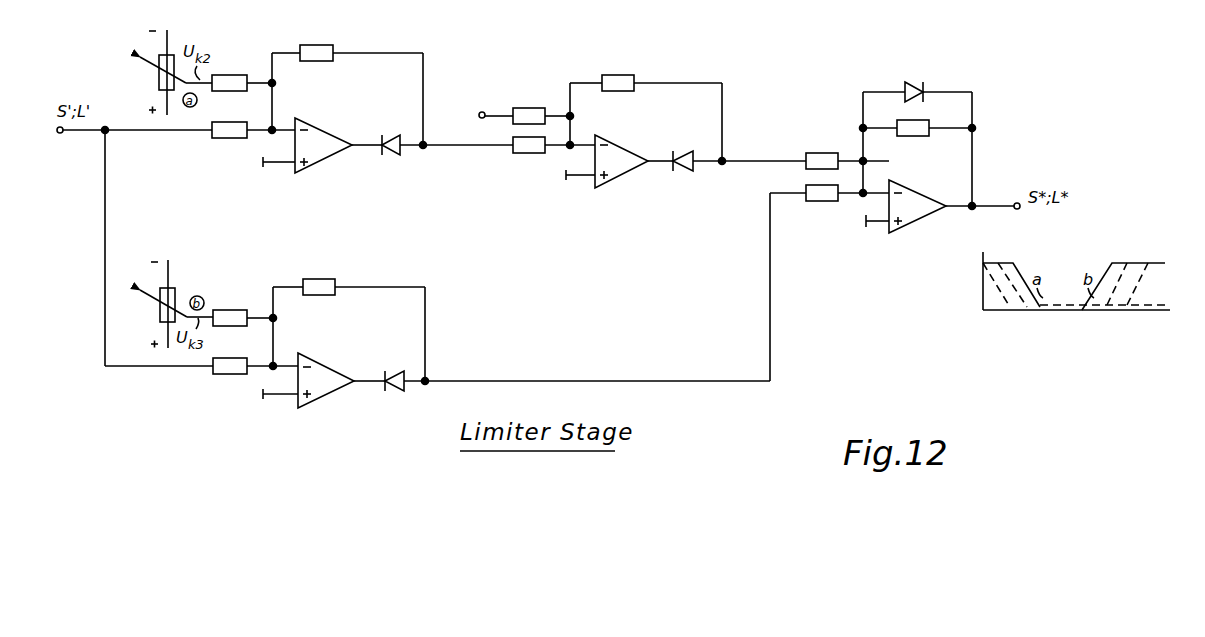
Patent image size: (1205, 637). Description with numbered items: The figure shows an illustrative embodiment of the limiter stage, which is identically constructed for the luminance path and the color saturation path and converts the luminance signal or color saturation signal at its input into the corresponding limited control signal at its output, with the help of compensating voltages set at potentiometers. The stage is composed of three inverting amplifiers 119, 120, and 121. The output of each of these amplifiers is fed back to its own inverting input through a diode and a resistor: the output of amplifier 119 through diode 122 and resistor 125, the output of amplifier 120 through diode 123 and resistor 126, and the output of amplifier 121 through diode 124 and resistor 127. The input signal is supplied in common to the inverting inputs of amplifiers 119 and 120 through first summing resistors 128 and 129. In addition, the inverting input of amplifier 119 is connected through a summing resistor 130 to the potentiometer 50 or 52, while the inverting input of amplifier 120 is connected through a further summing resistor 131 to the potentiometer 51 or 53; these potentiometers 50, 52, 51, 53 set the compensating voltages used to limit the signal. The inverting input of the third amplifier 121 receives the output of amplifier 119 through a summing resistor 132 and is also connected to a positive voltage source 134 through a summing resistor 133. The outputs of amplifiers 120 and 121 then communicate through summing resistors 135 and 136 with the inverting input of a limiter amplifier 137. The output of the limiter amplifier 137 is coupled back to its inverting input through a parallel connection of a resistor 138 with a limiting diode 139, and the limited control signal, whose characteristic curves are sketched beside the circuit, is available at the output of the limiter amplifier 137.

The potentiometer 50 is at (148, 72).
The potentiometer 52 is at (159, 82).
The potentiometer 51 is at (183, 300).
The potentiometer 53 is at (170, 296).
The inverting amplifier 119 is at (324, 150).
The inverting amplifier 120 is at (331, 386).
The inverting amplifier 121 is at (622, 166).
The diode 122 is at (392, 152).
The diode 123 is at (396, 389).
The diode 124 is at (684, 169).
The resistor 125 is at (313, 50).
The resistor 126 is at (318, 285).
The resistor 127 is at (618, 82).
The first summing resistor 128 is at (223, 136).
The first summing resistor 129 is at (230, 374).
The summing resistor 130 is at (238, 68).
The further summing resistor 131 is at (226, 314).
The summing resistor 132 is at (525, 150).
The summing resistor 133 is at (528, 112).
The positive voltage source 134 is at (481, 112).
The summing resistor 135 is at (820, 158).
The summing resistor 136 is at (824, 201).
The limiter amplifier 137 is at (916, 211).
The resistor 138 is at (918, 134).
The limiting diode 139 is at (912, 86).